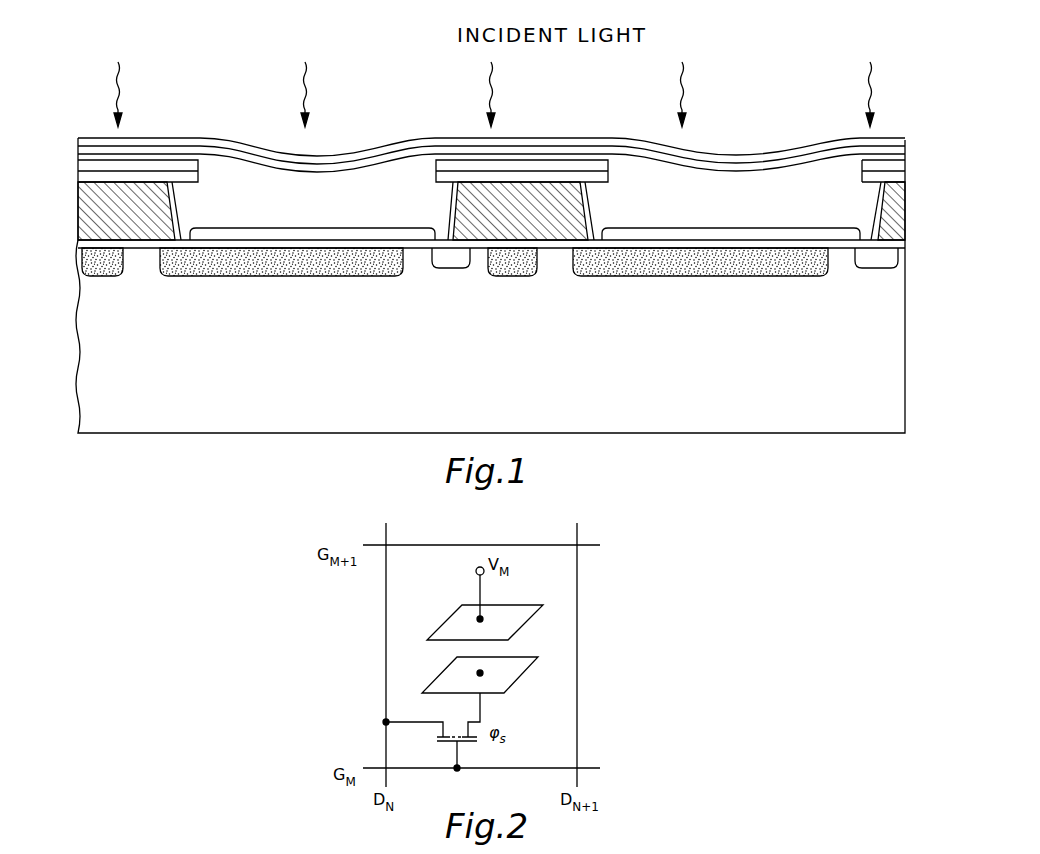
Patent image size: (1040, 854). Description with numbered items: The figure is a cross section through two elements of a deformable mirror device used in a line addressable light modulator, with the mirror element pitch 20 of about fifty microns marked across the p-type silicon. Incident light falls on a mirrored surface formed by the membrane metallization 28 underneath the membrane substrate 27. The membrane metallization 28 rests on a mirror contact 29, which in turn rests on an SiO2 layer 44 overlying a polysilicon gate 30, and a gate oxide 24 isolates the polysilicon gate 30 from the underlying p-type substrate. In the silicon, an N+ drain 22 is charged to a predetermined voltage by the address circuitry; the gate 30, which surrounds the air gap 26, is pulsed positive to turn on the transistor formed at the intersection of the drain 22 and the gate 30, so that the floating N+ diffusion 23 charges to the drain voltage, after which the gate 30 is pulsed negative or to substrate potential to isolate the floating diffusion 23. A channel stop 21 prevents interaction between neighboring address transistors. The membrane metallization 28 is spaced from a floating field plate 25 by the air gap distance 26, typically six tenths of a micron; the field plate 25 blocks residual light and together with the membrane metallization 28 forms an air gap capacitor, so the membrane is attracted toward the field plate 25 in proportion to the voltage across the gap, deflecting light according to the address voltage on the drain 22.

The mirror element pitch 20 is at (523, 390).
The channel stop 21 is at (447, 268).
The N+ drain 22 is at (517, 276).
The floating N+ diffusion 23 is at (590, 276).
The gate oxide 24 is at (670, 245).
The floating field plate 25 is at (765, 233).
The air gap 26 is at (738, 185).
The membrane substrate 27 is at (897, 140).
The membrane metallization 28 is at (905, 153).
The mirror contact 29 is at (907, 170).
The SiO2 layer 44 is at (907, 190).
The polysilicon gate 30 is at (907, 230).